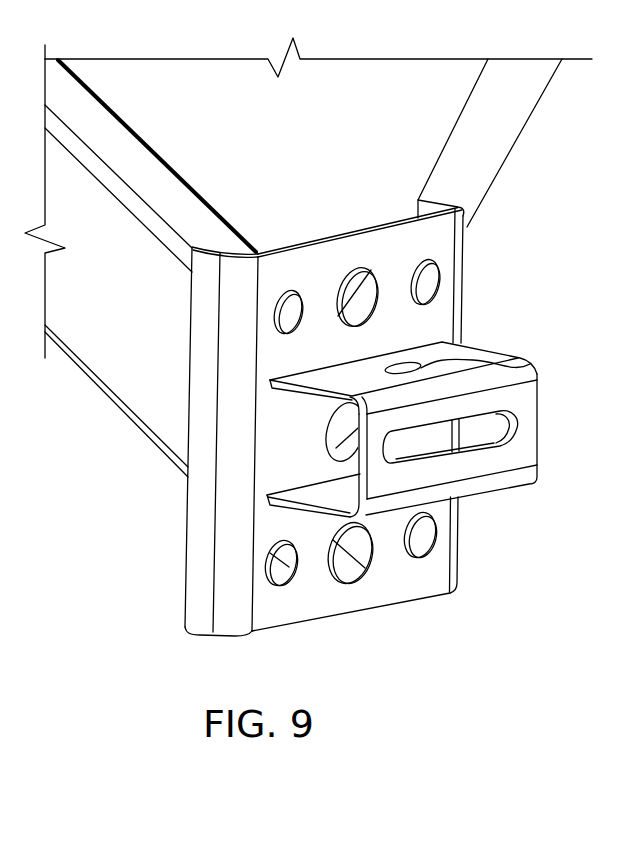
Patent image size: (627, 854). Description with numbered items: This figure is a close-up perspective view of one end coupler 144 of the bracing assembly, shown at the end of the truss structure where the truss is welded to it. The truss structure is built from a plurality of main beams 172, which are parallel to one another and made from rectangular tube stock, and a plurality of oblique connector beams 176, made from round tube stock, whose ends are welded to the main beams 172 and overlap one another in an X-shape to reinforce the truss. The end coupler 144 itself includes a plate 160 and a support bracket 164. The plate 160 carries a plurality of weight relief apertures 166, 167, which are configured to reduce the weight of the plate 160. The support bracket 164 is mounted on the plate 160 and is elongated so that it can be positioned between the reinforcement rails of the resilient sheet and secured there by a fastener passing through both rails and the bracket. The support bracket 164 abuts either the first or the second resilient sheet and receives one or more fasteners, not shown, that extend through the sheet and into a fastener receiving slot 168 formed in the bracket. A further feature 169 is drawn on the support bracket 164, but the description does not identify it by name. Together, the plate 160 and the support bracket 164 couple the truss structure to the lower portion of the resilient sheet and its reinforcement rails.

The end coupler 144 is at (494, 543).
The plate 160 is at (465, 281).
The support bracket 164 is at (434, 404).
The weight relief apertures 166 is at (293, 291).
The weight relief apertures 167 is at (365, 268).
The fastener receiving slot 168 is at (517, 440).
The tab 169 is at (530, 365).
The main beams 172 is at (192, 188).
The oblique connector beams 176 is at (515, 143).